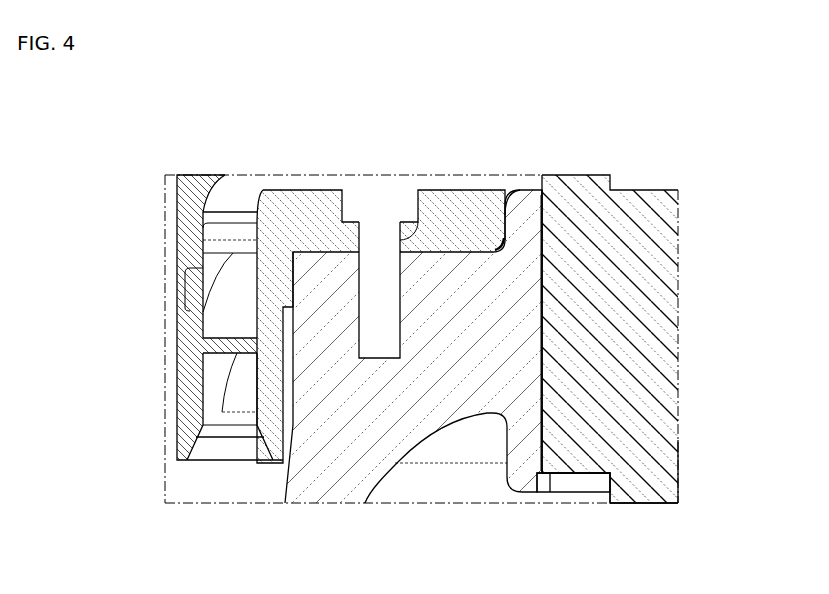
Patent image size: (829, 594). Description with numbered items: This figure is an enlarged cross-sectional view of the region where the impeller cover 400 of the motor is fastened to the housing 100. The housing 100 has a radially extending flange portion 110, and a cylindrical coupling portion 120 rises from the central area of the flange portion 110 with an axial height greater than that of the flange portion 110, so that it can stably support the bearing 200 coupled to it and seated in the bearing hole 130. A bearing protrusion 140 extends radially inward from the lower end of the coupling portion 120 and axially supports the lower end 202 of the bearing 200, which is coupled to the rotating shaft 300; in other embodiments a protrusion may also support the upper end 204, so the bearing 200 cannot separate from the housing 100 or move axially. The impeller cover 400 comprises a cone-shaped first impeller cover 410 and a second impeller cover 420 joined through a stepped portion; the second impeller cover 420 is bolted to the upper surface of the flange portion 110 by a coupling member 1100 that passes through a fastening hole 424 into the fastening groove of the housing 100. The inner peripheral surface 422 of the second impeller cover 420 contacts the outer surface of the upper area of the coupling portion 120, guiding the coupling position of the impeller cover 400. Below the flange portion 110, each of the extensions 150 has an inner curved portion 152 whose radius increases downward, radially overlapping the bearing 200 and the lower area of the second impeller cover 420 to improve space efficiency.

The housing 100 is at (276, 490).
The flange portion 110 is at (451, 343).
The coupling portion 120 is at (525, 205).
The bearing hole 130 is at (568, 222).
The bearing protrusion 140 is at (535, 493).
The extensions 150 is at (325, 483).
The curved portion 152 is at (407, 453).
The bearing 200 is at (644, 334).
The lower end 202 is at (585, 492).
The upper end 204 is at (545, 228).
The rotating shaft 300 is at (667, 490).
The impeller cover 400 is at (157, 320).
The first impeller cover 410 is at (193, 243).
The second impeller cover 420 is at (171, 386).
The inner peripheral surface 422 is at (508, 188).
The fastening hole 424 is at (435, 188).
The coupling member 1100 is at (377, 188).